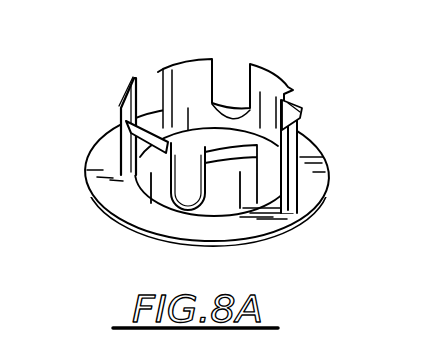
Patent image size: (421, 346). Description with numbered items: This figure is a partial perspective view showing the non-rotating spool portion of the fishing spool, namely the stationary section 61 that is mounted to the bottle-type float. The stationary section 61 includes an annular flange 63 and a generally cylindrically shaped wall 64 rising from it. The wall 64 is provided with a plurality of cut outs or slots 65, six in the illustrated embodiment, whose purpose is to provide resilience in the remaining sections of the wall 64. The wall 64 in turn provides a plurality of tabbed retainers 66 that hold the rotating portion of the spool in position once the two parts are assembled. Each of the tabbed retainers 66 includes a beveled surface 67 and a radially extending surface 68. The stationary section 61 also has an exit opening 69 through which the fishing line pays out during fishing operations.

The stationary section 61 is at (330, 167).
The annular flange 63 is at (303, 148).
The cylindrically shaped wall 64 is at (233, 210).
The slots 65 is at (229, 75).
The tabbed retainers 66 is at (118, 111).
The beveled surface 67 is at (117, 108).
The radially extending surface 68 is at (120, 120).
The exit opening 69 is at (133, 213).